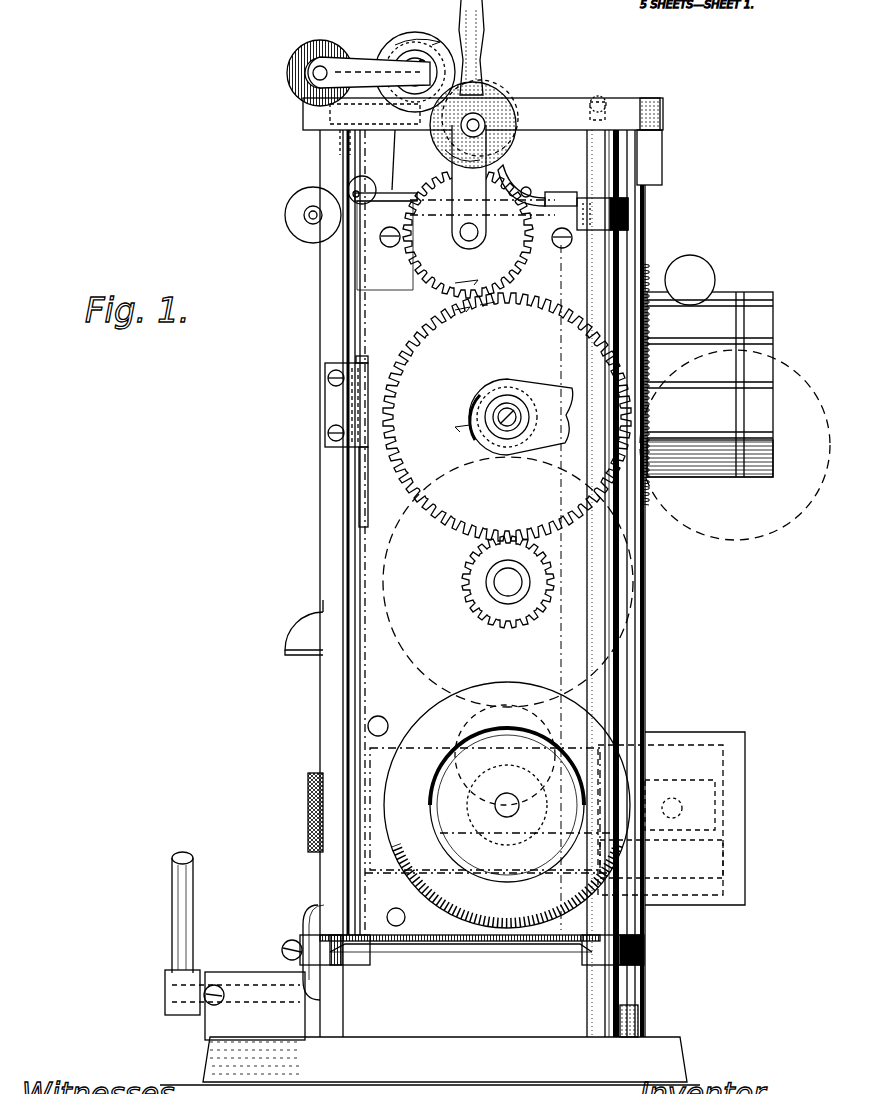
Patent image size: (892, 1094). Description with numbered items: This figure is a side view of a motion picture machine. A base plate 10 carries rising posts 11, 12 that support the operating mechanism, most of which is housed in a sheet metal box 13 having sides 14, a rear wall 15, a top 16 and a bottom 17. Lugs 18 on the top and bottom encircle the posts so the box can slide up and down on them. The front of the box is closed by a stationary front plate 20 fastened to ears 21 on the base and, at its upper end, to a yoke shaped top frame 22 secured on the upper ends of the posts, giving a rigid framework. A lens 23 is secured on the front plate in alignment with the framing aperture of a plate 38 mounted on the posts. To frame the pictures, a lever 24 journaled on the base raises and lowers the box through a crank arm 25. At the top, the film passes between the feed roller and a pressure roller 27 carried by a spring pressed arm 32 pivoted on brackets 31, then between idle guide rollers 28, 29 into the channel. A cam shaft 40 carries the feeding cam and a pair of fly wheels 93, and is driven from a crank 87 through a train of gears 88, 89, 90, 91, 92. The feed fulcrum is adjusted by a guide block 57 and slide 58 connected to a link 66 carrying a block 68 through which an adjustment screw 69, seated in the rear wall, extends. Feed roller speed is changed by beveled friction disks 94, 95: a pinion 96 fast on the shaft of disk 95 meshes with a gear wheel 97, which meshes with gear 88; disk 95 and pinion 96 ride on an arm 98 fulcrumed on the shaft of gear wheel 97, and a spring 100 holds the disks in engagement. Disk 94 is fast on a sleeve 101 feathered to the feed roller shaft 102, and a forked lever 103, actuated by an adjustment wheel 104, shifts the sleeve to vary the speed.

The base plate 10 is at (430, 1061).
The post 11 is at (322, 696).
The post 12 is at (605, 680).
The box 13 is at (650, 571).
The side 14 is at (627, 708).
The rear wall 15 is at (360, 496).
The top 16 is at (561, 200).
The bottom 17 is at (528, 946).
The ear or lug 18 is at (628, 216).
The front plate 20 is at (648, 633).
The ear 21 is at (638, 1020).
The top frame 22 is at (565, 100).
The lens 23 is at (735, 397).
The lever 24 is at (220, 977).
The crank arm 25 is at (318, 978).
The pressure roller 27 is at (561, 564).
The idle guide roller 28 is at (290, 215).
The idle guide roller 29 is at (366, 178).
The bracket 31 is at (463, 530).
The arm 32 is at (483, 45).
The plate 38 is at (327, 406).
The cam shaft 40 is at (507, 818).
The guide block 57 is at (727, 769).
The slide 58 is at (745, 809).
The link 66 is at (745, 851).
The block 68 is at (487, 821).
The adjustment screw 69 is at (310, 826).
The crank 87 is at (541, 386).
The gear 88 is at (507, 417).
The gear 89 is at (466, 588).
The gear 90 is at (422, 678).
The gear 91 is at (505, 704).
The gear 92 is at (490, 822).
The fly wheel 93 is at (507, 805).
The friction disk 94 is at (406, 65).
The friction disk 95 is at (492, 96).
The pinion 96 is at (508, 148).
The gear wheel 97 is at (406, 272).
The arm 98 is at (469, 187).
The spring 100 is at (512, 196).
The sleeve 101 is at (425, 64).
The shaft 102 is at (375, 126).
The forked lever 103 is at (358, 52).
The adjustment wheel 104 is at (288, 75).